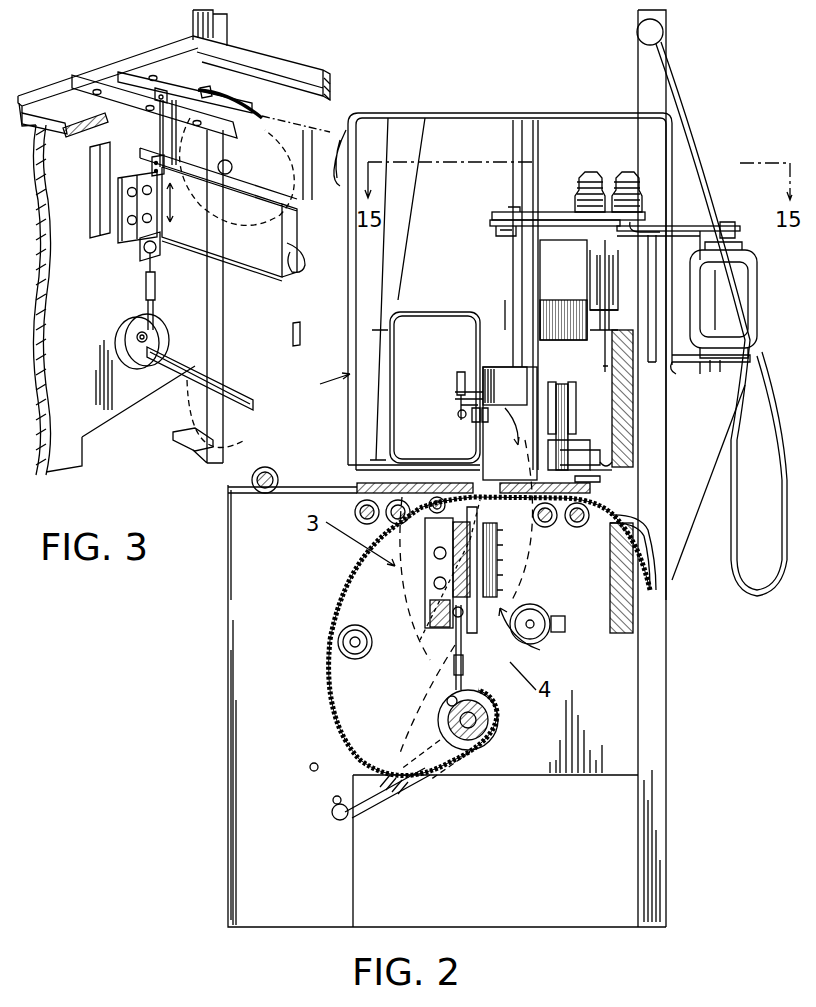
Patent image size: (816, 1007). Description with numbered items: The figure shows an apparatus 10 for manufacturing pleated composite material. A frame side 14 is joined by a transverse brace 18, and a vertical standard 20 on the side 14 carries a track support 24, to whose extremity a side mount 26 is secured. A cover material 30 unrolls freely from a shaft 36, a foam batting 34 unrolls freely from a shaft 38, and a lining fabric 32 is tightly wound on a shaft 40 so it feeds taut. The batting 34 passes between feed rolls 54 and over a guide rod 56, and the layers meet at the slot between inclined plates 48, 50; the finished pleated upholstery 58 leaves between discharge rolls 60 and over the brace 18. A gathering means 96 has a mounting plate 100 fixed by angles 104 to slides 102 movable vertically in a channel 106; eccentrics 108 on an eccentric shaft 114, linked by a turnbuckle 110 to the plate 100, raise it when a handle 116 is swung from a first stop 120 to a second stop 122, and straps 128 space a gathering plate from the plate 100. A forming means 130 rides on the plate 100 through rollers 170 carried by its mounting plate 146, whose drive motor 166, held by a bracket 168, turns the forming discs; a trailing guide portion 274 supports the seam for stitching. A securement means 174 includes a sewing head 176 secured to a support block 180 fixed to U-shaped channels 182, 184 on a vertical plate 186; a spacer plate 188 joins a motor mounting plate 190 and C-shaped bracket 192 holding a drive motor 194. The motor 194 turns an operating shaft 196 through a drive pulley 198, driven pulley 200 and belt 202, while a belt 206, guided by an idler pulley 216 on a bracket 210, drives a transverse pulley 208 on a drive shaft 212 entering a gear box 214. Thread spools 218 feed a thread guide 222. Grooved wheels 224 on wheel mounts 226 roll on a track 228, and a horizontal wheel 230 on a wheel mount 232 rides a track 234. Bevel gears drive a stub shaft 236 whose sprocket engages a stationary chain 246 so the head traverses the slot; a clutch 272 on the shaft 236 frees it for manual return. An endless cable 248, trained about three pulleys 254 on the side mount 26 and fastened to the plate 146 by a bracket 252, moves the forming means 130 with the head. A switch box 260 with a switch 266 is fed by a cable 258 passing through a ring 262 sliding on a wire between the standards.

In FIG. 2, the apparatus 10 is at (465, 706).
In FIG. 2, the side 14 is at (524, 775).
In FIG. 2, the brace 18 is at (625, 602).
In FIG. 3, the standard 20 is at (222, 26).
In FIG. 2, the standard 20 is at (664, 736).
In FIG. 3, the track support 24 is at (323, 67).
In FIG. 2, the track support 24 is at (625, 420).
In FIG. 3, the side mount 26 is at (72, 82).
In FIG. 2, the cover material 30 is at (388, 600).
In FIG. 2, the lining fabric 32 is at (290, 498).
In FIG. 3, the batting 34 is at (175, 445).
In FIG. 2, the batting 34 is at (497, 736).
In FIG. 2, the shaft 36 is at (356, 658).
In FIG. 2, the shaft 38 is at (268, 470).
In FIG. 2, the shaft 40 is at (487, 700).
In FIG. 3, the plate 48 is at (72, 138).
In FIG. 2, the plate 48 is at (356, 485).
In FIG. 3, the plate 50 is at (142, 74).
In FIG. 2, the plate 50 is at (594, 528).
In FIG. 2, the feed rolls 54 is at (370, 524).
In FIG. 2, the guide rod 56 is at (445, 508).
In FIG. 2, the pleated upholstery 58 is at (652, 562).
In FIG. 2, the discharge rolls 60 is at (552, 528).
In FIG. 3, the gathering means 96 is at (167, 96).
In FIG. 3, the mounting plate 100 is at (264, 262).
In FIG. 2, the mounting plate 100 is at (478, 552).
In FIG. 3, the slides 102 is at (118, 275).
In FIG. 2, the slides 102 is at (440, 632).
In FIG. 3, the angles 104 is at (158, 226).
In FIG. 3, the channel 106 is at (90, 218).
In FIG. 3, the eccentric 108 is at (164, 338).
In FIG. 3, the turnbuckle 110 is at (154, 292).
In FIG. 2, the turnbuckle 110 is at (452, 678).
In FIG. 3, the eccentric shaft 114 is at (176, 360).
In FIG. 2, the handle 116 is at (372, 790).
In FIG. 2, the first stop 120 is at (330, 809).
In FIG. 2, the second stop 122 is at (310, 772).
In FIG. 3, the straps 128 is at (158, 134).
In FIG. 3, the forming means 130 is at (260, 100).
In FIG. 3, the mounting plate 146 is at (298, 314).
In FIG. 2, the mounting plate 146 is at (462, 652).
In FIG. 2, the drive motor 166 is at (548, 637).
In FIG. 2, the bracket 168 is at (540, 654).
In FIG. 3, the rollers 170 is at (300, 282).
In FIG. 2, the securement means 174 is at (323, 385).
In FIG. 2, the sewing head 176 is at (435, 367).
In FIG. 2, the support block 180 is at (513, 280).
In FIG. 2, the U-shape channel 182 is at (590, 270).
In FIG. 2, the U-shape channel 184 is at (590, 313).
In FIG. 2, the plate 186 is at (652, 364).
In FIG. 2, the spacer plate 188 is at (695, 326).
In FIG. 2, the motor mounting plate 190 is at (709, 373).
In FIG. 2, the mounting bracket 192 is at (712, 370).
In FIG. 2, the drive motor 194 is at (745, 290).
In FIG. 2, the operating shaft 196 is at (500, 238).
In FIG. 2, the drive pulley 198 is at (735, 228).
In FIG. 2, the driven pulley 200 is at (490, 221).
In FIG. 2, the belt 202 is at (688, 226).
In FIG. 2, the belt 206 is at (556, 212).
In FIG. 2, the transverse pulley 208 is at (512, 207).
In FIG. 2, the bracket 210 is at (640, 215).
In FIG. 2, the drive shaft 212 is at (513, 303).
In FIG. 2, the gear box 214 is at (510, 423).
In FIG. 2, the idler pulley 216 is at (590, 254).
In FIG. 2, the thread spools 218 is at (622, 172).
In FIG. 2, the thread guide 222 is at (616, 106).
In FIG. 2, the grooved wheels 224 is at (600, 286).
In FIG. 2, the wheel mounts 226 is at (620, 288).
In FIG. 2, the track 228 is at (574, 380).
In FIG. 2, the wheel 230 is at (612, 473).
In FIG. 2, the wheel mount 232 is at (590, 494).
In FIG. 2, the track 234 is at (615, 463).
In FIG. 2, the stub shaft 236 is at (552, 380).
In FIG. 2, the chain 246 is at (570, 419).
In FIG. 2, the endless cable 248 is at (460, 372).
In FIG. 2, the bracket 252 is at (338, 174).
In FIG. 2, the pulleys 254 is at (456, 393).
In FIG. 2, the cable 258 is at (780, 386).
In FIG. 2, the switch box 260 is at (498, 370).
In FIG. 2, the ring 262 is at (662, 36).
In FIG. 2, the switch 266 is at (458, 414).
In FIG. 2, the clutch 272 is at (576, 488).
In FIG. 3, the trailing guide portion 274 is at (218, 82).